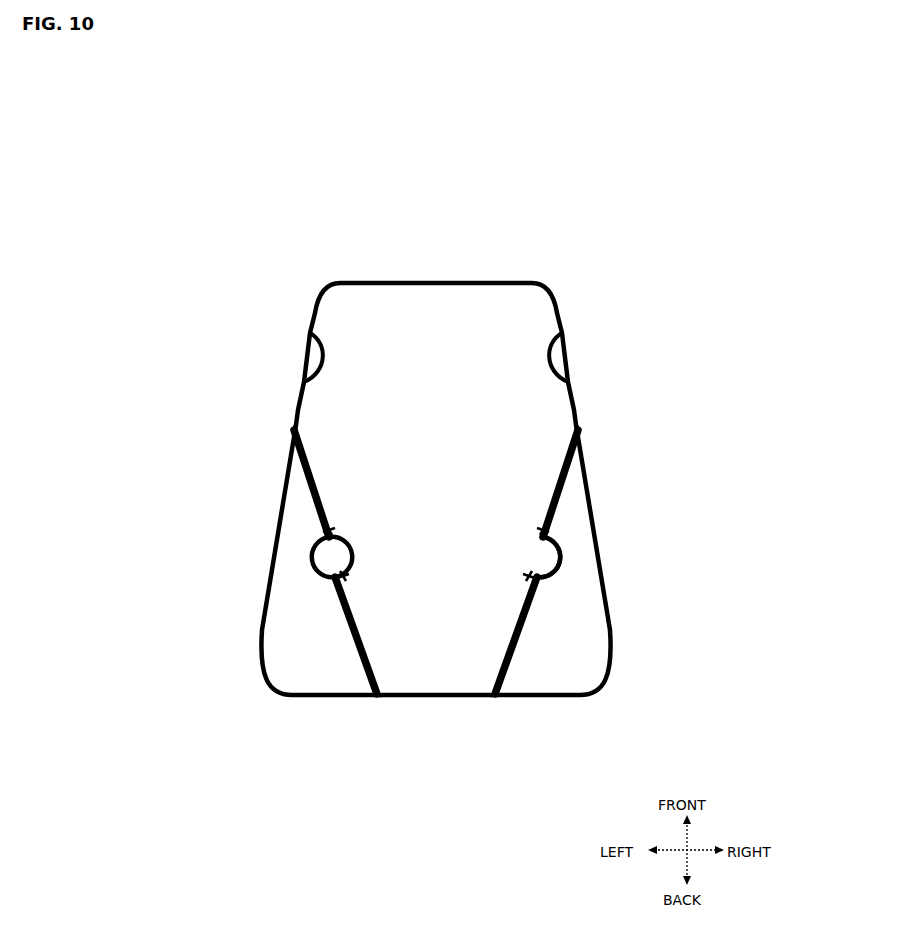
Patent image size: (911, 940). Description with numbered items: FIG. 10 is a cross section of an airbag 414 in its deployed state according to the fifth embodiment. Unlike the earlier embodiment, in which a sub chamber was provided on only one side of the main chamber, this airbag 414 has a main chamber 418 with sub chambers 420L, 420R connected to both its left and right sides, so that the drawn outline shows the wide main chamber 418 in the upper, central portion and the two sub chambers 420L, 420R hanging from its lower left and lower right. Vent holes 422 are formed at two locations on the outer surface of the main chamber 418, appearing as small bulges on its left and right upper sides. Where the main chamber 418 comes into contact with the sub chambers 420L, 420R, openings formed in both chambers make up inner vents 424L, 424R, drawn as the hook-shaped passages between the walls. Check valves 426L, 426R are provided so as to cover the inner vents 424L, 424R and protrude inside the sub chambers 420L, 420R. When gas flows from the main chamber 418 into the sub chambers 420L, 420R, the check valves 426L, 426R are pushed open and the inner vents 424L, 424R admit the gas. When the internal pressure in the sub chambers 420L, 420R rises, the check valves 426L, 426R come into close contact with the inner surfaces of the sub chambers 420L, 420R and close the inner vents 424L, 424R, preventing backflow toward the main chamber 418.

The airbag 414 is at (320, 255).
The main chamber 418 is at (307, 418).
The sub chamber 420L is at (305, 698).
The sub chamber 420R is at (537, 698).
The vent hole 422 is at (311, 357).
The inner vent 424L is at (333, 555).
The inner vent 424R is at (537, 562).
The check valve 426L is at (340, 577).
The check valve 426R is at (563, 560).